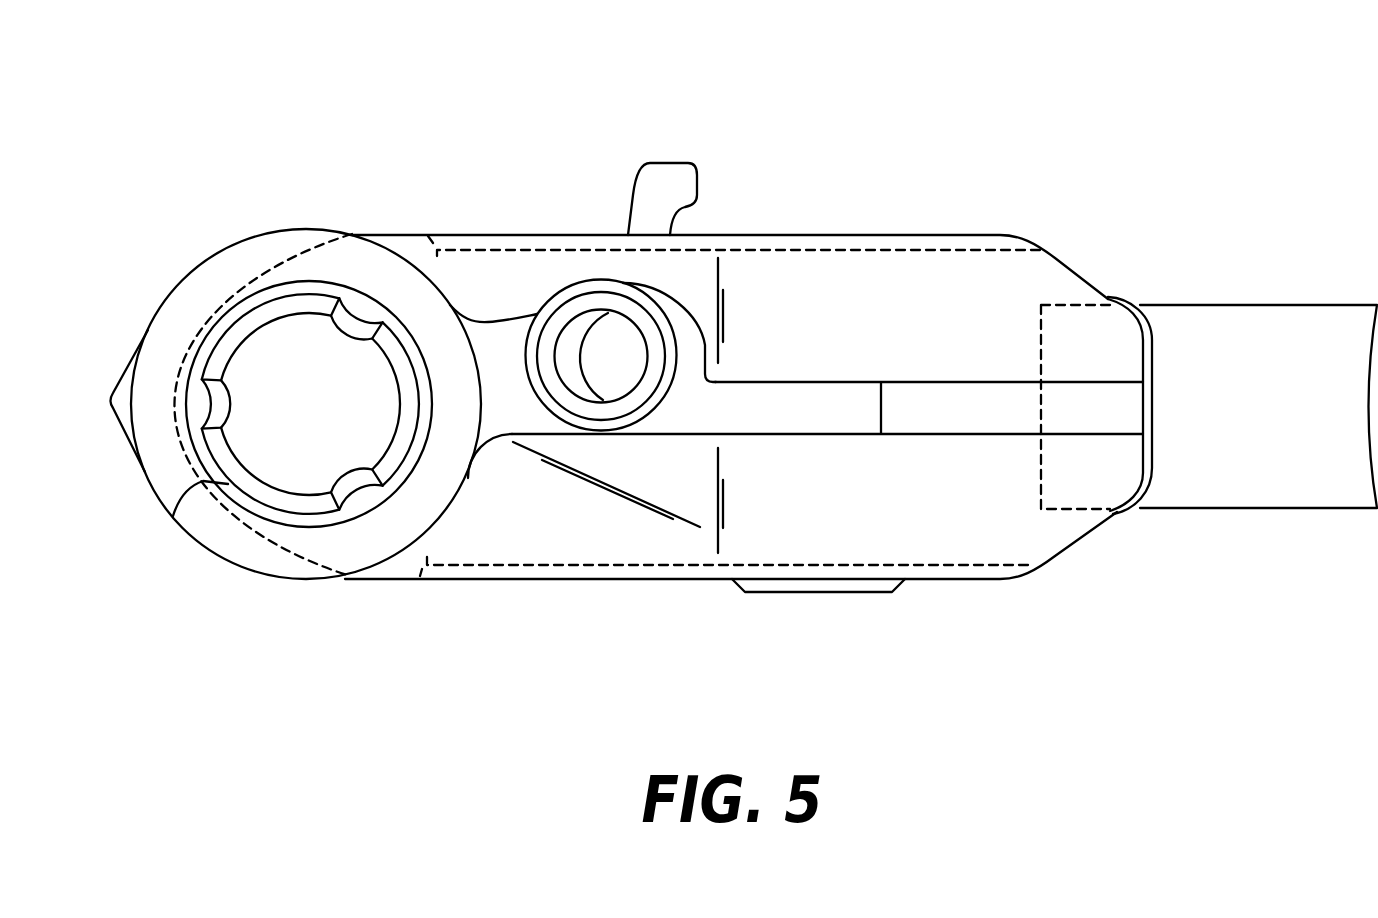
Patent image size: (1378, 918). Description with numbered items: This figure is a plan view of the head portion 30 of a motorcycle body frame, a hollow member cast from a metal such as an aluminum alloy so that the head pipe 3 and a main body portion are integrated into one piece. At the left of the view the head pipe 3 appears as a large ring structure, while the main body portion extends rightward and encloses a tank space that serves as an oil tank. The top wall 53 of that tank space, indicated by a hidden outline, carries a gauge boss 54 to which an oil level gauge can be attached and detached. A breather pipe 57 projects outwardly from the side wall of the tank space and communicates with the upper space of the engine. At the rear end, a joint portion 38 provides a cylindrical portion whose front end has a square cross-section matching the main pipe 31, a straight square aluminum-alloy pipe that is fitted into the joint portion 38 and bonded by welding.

The head portion 30 is at (378, 208).
The head pipe 3 is at (170, 516).
The gauge boss 54 is at (587, 303).
The breather pipe 57 is at (665, 175).
The top wall 53 is at (978, 268).
The joint portion 38 is at (1133, 338).
The main pipe 31 is at (1322, 310).